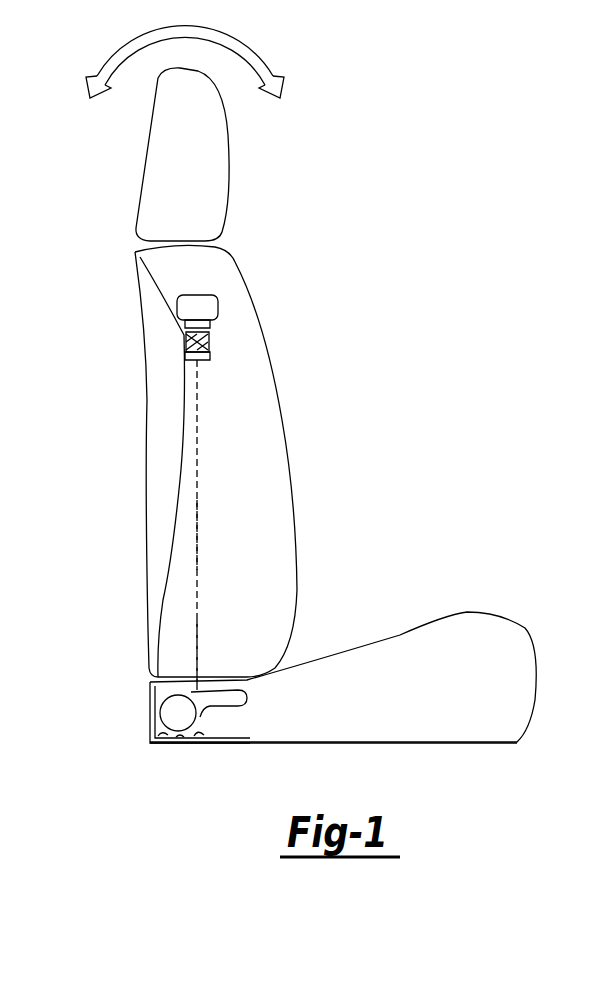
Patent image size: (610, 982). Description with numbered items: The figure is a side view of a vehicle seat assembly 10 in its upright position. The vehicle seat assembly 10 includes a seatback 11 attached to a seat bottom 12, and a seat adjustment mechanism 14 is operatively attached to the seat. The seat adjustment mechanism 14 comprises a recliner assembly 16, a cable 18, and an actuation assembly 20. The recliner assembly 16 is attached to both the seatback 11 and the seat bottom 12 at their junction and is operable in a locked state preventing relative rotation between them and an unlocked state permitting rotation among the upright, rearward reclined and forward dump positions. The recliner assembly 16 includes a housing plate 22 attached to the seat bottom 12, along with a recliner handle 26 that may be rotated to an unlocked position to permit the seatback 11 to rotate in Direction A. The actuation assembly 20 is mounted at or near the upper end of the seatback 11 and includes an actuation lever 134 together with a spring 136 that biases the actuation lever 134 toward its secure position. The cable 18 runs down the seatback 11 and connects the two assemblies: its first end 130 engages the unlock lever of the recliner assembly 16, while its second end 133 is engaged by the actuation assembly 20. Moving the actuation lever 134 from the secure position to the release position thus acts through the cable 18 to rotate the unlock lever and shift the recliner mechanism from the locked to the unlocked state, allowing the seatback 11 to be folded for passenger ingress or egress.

The vehicle seat assembly 10 is at (358, 216).
The seatback 11 is at (293, 490).
The seat bottom 12 is at (480, 613).
The seat adjustment mechanism 14 is at (128, 755).
The recliner assembly 16 is at (150, 700).
The cable 18 is at (197, 535).
The actuation assembly 20 is at (216, 283).
The housing plate 22 is at (197, 747).
The recliner handle 26 is at (238, 707).
The first end of the cable 130 is at (199, 650).
The second end of the cable 133 is at (199, 389).
The actuation lever 134 is at (213, 307).
The spring 136 is at (213, 348).